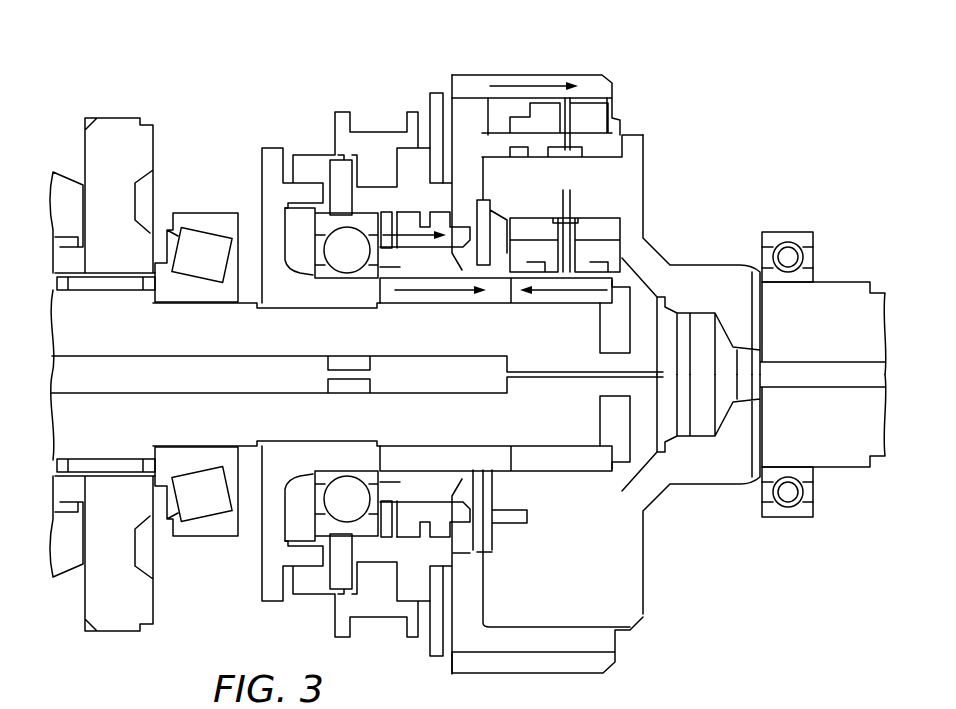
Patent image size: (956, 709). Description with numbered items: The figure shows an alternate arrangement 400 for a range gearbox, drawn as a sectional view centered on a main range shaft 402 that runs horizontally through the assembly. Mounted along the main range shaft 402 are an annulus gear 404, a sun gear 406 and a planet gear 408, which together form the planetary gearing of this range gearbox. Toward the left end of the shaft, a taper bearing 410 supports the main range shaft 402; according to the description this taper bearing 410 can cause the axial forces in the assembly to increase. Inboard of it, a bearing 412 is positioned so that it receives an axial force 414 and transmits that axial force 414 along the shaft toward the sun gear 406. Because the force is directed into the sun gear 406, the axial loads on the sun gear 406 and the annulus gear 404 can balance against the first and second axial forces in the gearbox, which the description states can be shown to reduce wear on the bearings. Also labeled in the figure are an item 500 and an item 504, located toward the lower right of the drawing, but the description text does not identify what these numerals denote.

The alternate arrangement 400 is at (706, 40).
The main range shaft 402 is at (73, 427).
The annulus gear 404 is at (583, 75).
The sun gear 406 is at (628, 272).
The planet gear 408 is at (645, 180).
The taper bearing 410 is at (200, 190).
The bearing 412 is at (328, 228).
The axial force 414 is at (433, 296).
The assembly 500 is at (776, 681).
The lower housing 504 is at (562, 589).